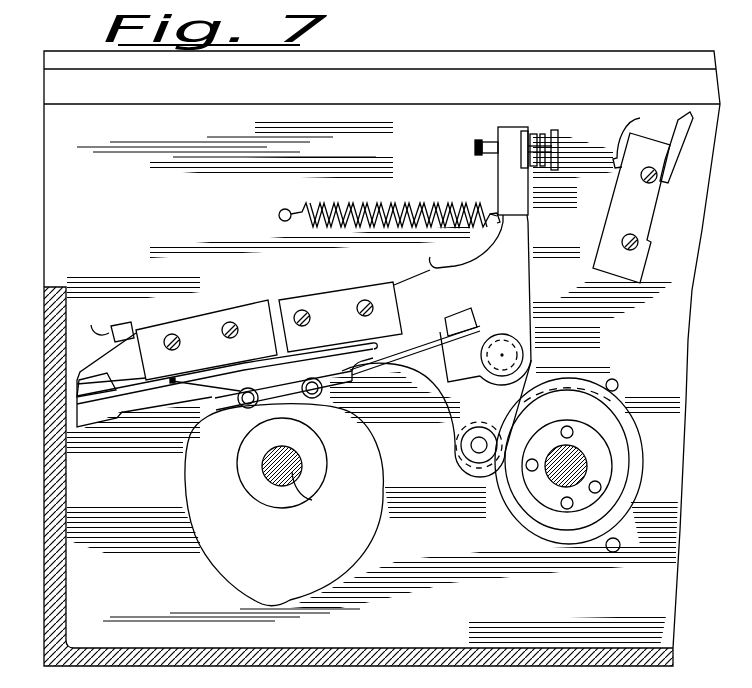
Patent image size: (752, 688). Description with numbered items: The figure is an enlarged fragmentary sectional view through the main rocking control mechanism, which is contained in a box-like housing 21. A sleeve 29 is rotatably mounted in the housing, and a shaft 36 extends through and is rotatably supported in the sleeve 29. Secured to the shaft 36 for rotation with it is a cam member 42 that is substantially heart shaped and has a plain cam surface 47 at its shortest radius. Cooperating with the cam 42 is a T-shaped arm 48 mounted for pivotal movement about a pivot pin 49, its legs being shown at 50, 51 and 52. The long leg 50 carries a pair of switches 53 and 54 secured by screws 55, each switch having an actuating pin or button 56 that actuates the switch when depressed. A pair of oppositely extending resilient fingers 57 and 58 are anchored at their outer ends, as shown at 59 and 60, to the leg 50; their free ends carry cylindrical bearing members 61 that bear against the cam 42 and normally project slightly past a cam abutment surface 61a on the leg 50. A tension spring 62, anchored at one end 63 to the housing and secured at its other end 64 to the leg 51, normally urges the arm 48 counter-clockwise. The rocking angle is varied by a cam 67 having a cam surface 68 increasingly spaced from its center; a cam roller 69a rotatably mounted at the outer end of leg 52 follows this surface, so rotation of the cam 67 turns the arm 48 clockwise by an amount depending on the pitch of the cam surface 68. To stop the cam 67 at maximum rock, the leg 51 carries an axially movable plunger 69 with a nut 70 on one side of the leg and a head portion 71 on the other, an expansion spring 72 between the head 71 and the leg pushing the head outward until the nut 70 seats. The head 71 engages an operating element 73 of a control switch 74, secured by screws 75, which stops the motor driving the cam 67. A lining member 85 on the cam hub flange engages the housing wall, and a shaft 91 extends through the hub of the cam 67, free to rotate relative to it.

The box-like housing 21 is at (421, 657).
The sleeve 29 is at (255, 488).
The shaft 36 is at (312, 500).
The cam member 42 is at (372, 523).
The plain cam surface 47 is at (290, 408).
The T-shaped arm 48 is at (478, 302).
The pivot pin 49 is at (524, 348).
The long leg 50 is at (116, 362).
The leg 51 is at (520, 240).
The leg 52 is at (470, 398).
The switch 53 is at (194, 333).
The switch 54 is at (343, 292).
The screws 55 is at (237, 326).
The actuating pin or button 56 is at (174, 377).
The resilient finger 57 is at (184, 390).
The resilient finger 58 is at (370, 354).
The anchorage 59 is at (73, 415).
The anchorage 60 is at (478, 326).
The cylindrical bearing members 61 is at (304, 386).
The cam abutment surface 61a is at (254, 386).
The tension spring 62 is at (395, 207).
The spring anchorage 63 is at (279, 213).
The spring end 64 is at (495, 213).
The cam 67 is at (634, 463).
The cam surface 68 is at (614, 380).
The plunger 69 is at (550, 146).
The cam roller 69a is at (462, 449).
The nut 70 is at (492, 141).
The head portion 71 is at (554, 148).
The expansion spring 72 is at (525, 140).
The operating element 73 is at (643, 196).
The control switch 74 is at (641, 200).
The screws 75 is at (638, 243).
The lining member 85 is at (549, 434).
The shaft 91 is at (577, 456).